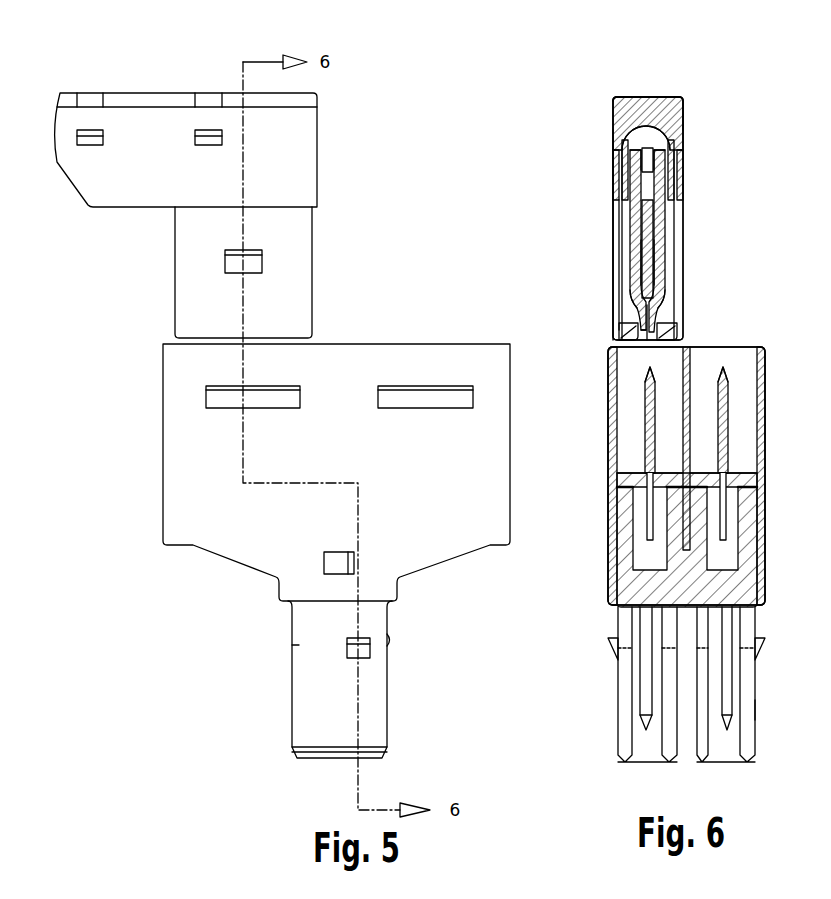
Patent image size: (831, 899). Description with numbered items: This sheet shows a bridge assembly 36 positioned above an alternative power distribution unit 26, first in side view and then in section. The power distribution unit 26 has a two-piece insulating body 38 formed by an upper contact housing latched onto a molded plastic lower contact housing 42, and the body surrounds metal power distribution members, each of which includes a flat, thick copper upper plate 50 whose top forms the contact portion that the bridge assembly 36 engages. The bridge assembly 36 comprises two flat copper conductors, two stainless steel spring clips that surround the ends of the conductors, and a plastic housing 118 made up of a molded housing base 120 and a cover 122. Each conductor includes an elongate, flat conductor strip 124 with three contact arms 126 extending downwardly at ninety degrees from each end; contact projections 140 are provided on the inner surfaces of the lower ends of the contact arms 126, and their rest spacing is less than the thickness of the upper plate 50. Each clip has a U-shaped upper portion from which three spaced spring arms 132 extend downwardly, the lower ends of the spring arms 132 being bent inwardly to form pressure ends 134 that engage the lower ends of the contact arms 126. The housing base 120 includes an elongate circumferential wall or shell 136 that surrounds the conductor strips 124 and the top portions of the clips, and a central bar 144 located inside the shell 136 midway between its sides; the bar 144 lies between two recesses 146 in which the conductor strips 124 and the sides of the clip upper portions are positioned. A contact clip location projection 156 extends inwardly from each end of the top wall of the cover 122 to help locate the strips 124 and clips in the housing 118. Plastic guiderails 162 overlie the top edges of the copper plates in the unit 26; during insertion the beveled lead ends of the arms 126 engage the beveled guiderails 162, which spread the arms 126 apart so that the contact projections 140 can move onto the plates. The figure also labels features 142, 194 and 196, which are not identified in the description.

In FIG. 5, the power distribution unit 26 is at (238, 570).
In FIG. 6, the power distribution unit 26 is at (776, 512).
In FIG. 5, the bridge assembly 36 is at (322, 108).
In FIG. 6, the bridge assembly 36 is at (577, 116).
In FIG. 6, the insulating body 38 is at (762, 465).
In FIG. 6, the lower contact housing 42 is at (753, 705).
In FIG. 6, the upper plate 50 is at (723, 440).
In FIG. 6, the plastic housing 118 is at (630, 89).
In FIG. 6, the housing base 120 is at (680, 325).
In FIG. 6, the cover 122 is at (677, 97).
In FIG. 6, the conductor strip 124 is at (660, 161).
In FIG. 6, the contact arms 126 is at (658, 255).
In FIG. 6, the spring arms 132 is at (630, 226).
In FIG. 6, the pressure ends 134 is at (633, 298).
In FIG. 6, the circumferential wall or shell 136 is at (615, 163).
In FIG. 6, the contact projections 140 is at (640, 325).
In FIG. 6, the gap between contact tips 142 is at (617, 343).
In FIG. 6, the central bar 144 is at (647, 205).
In FIG. 6, the recesses 146 is at (622, 189).
In FIG. 6, the contact clip location projection 156 is at (653, 127).
In FIG. 6, the guiderails 162 is at (724, 380).
In FIG. 6, the terminal pin 194 is at (722, 698).
In FIG. 6, the terminal end 196 is at (793, 698).